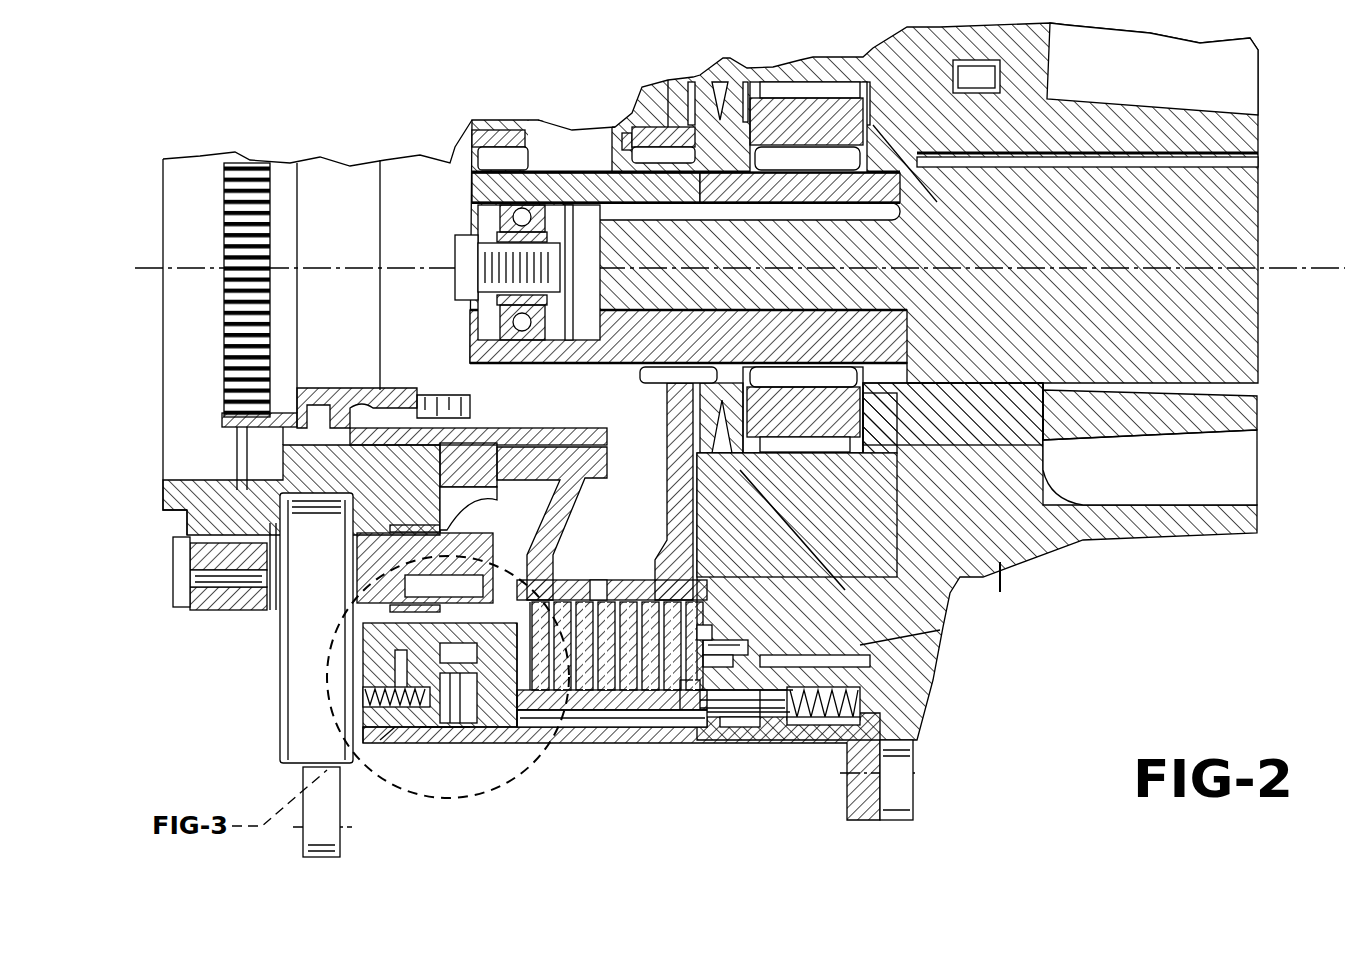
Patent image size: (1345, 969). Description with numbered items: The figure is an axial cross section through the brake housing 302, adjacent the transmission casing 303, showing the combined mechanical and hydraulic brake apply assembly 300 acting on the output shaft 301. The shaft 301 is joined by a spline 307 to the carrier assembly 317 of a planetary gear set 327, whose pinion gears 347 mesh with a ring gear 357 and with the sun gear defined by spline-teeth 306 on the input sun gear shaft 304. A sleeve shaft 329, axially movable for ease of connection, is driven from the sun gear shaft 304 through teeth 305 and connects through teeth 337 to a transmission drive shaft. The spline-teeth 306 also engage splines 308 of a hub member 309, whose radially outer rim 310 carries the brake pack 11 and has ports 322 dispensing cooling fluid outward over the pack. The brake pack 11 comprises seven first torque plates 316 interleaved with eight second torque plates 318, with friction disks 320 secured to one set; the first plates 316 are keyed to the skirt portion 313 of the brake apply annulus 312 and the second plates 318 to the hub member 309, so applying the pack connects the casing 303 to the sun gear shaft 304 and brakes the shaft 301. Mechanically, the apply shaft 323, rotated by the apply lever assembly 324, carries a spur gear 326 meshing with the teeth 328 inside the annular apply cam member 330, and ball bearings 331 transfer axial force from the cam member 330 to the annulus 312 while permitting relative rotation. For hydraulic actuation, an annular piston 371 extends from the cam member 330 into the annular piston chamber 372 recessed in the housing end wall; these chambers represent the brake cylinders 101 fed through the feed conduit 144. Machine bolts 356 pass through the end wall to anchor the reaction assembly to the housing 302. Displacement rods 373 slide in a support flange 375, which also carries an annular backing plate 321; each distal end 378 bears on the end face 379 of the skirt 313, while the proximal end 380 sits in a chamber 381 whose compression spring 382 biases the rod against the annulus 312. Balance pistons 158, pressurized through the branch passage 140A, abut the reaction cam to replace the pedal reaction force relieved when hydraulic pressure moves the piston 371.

The output shaft 301 is at (1232, 243).
The teeth 337 is at (222, 386).
The sleeve shaft 329 is at (380, 410).
The teeth 305 is at (500, 378).
The spline-teeth 306 is at (740, 377).
The sun gear shaft 304 is at (818, 352).
The pinion gears 347 is at (828, 400).
The carrier assembly 317 is at (905, 410).
The spline 307 is at (1023, 385).
The spur gear 326 is at (478, 518).
The splines 308 is at (660, 384).
The hub member 309 is at (690, 515).
The teeth 328 is at (545, 605).
The brake pack 11 is at (588, 606).
The radially outer rim 310 is at (620, 580).
The ports 322 is at (680, 600).
The apply shaft 323 is at (190, 558).
The apply lever assembly 324 is at (190, 590).
The annular piston 371 is at (440, 620).
The friction disks 320 is at (738, 645).
The brake cylinders 101 is at (333, 553).
The annular piston chamber 372 is at (395, 640).
The feed conduit 144 is at (400, 650).
The balance pistons 158 is at (405, 662).
The branch passage 140A is at (410, 690).
The machine bolts 356 is at (415, 705).
The annular apply cam member 330 is at (400, 745).
The ball bearings 331 is at (435, 745).
The brake housing 302 is at (430, 770).
The second torque plates 318 is at (515, 722).
The first torque plates 316 is at (540, 722).
The brake apply assembly 300 is at (568, 730).
The skirt portion 313 is at (640, 715).
The brake apply annulus 312 is at (657, 715).
The distal end 378 is at (692, 695).
The end face 379 is at (697, 722).
The displacement rods 373 is at (715, 717).
The support flange 375 is at (738, 715).
The proximal end 380 is at (848, 745).
The planetary gear set 327 is at (920, 545).
The casing 303 is at (1147, 535).
The annular backing plate 321 is at (860, 647).
The ring gear 357 is at (850, 665).
The chamber 381 is at (850, 703).
The compression spring 382 is at (863, 714).